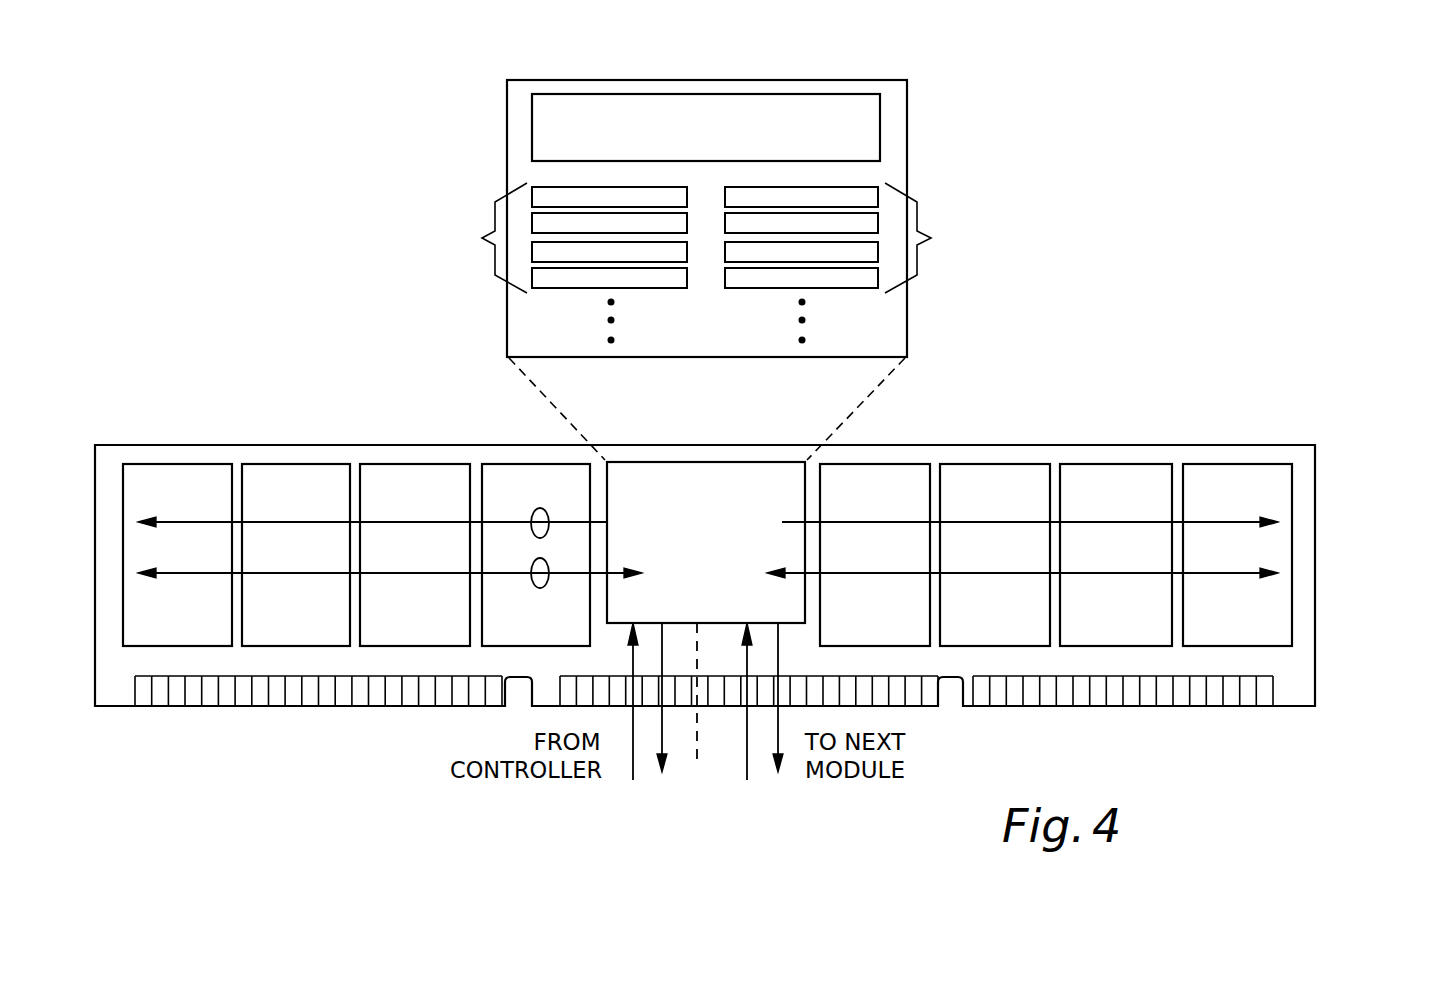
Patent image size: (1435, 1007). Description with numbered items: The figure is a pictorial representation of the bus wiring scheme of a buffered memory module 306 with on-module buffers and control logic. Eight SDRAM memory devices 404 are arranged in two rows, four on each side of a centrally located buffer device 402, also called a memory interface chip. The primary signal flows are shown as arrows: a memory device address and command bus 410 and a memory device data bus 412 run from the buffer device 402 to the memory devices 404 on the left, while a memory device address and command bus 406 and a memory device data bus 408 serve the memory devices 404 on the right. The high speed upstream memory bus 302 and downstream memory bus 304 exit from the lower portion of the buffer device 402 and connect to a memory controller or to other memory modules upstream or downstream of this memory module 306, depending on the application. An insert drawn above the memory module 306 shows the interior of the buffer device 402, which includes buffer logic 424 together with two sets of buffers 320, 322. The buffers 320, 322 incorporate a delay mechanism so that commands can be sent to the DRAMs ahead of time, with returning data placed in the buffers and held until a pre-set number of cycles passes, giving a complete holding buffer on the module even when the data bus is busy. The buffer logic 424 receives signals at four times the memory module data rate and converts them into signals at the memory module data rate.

The upstream memory bus 302 is at (662, 780).
The downstream memory bus 304 is at (633, 780).
The memory module 306 is at (786, 445).
The buffers 320 is at (557, 238).
The buffers 322 is at (854, 238).
The buffer device 402 is at (781, 615).
The memory device 404 is at (707, 555).
The memory device address and command bus 406 is at (1177, 521).
The memory device data bus 408 is at (1229, 573).
The memory device address and command bus 410 is at (603, 521).
The memory device data bus 412 is at (211, 576).
The buffer logic 424 is at (861, 149).